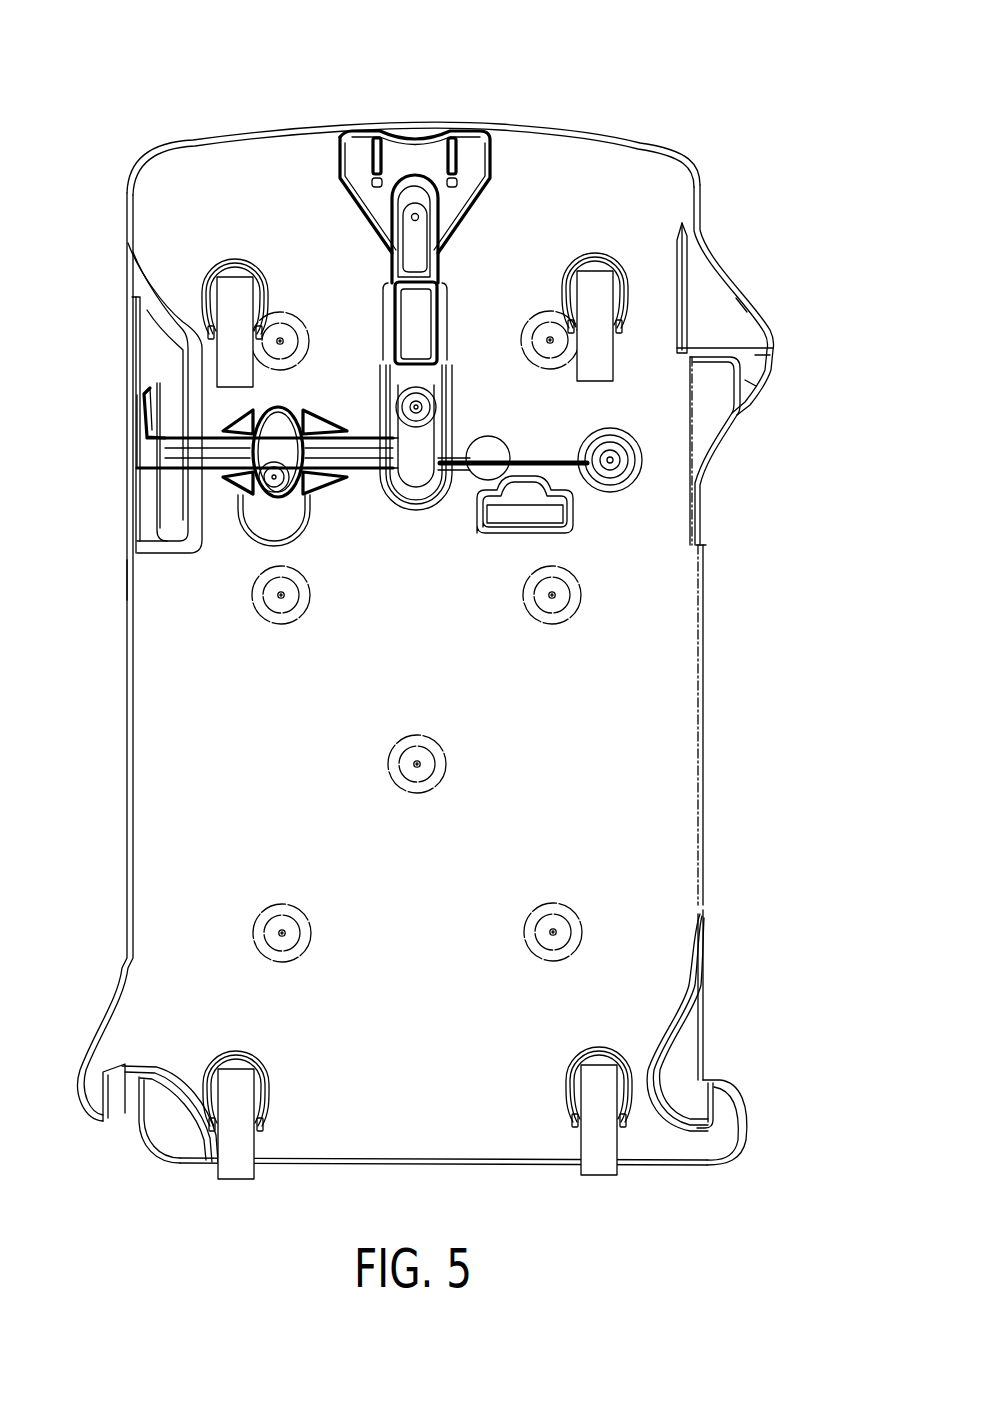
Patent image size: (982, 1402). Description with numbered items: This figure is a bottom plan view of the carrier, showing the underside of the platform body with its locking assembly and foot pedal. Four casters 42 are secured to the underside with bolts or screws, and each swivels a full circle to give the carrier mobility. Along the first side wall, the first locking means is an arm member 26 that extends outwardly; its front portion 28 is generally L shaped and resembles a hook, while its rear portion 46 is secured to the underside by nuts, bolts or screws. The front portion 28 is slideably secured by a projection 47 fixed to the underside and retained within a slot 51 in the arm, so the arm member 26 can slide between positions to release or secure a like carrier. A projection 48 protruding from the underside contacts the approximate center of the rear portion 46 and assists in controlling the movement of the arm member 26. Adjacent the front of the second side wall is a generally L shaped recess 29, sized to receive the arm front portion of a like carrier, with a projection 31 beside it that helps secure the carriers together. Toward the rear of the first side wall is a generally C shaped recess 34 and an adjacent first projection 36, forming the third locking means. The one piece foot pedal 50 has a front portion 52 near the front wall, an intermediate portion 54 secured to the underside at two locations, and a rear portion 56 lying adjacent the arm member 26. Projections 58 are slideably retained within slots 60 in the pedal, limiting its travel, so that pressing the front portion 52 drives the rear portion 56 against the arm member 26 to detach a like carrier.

The arm member 26 is at (370, 484).
The arm member front portion 28 is at (167, 481).
The L shaped recess 29 is at (719, 429).
The projection 31 is at (784, 363).
The C shaped recess 34 is at (687, 1071).
The first projection 36 is at (749, 1147).
The casters 42 is at (201, 289).
The arm member rear portion 46 is at (468, 484).
The projection 47 is at (271, 486).
The projection 48 is at (562, 543).
The foot pedal 50 is at (408, 120).
The slot 51 is at (268, 422).
The foot pedal front portion 52 is at (463, 137).
The foot pedal intermediate portion 54 is at (455, 300).
The foot pedal rear portion 56 is at (384, 423).
The projections 58 is at (410, 252).
The slots 60 is at (395, 186).